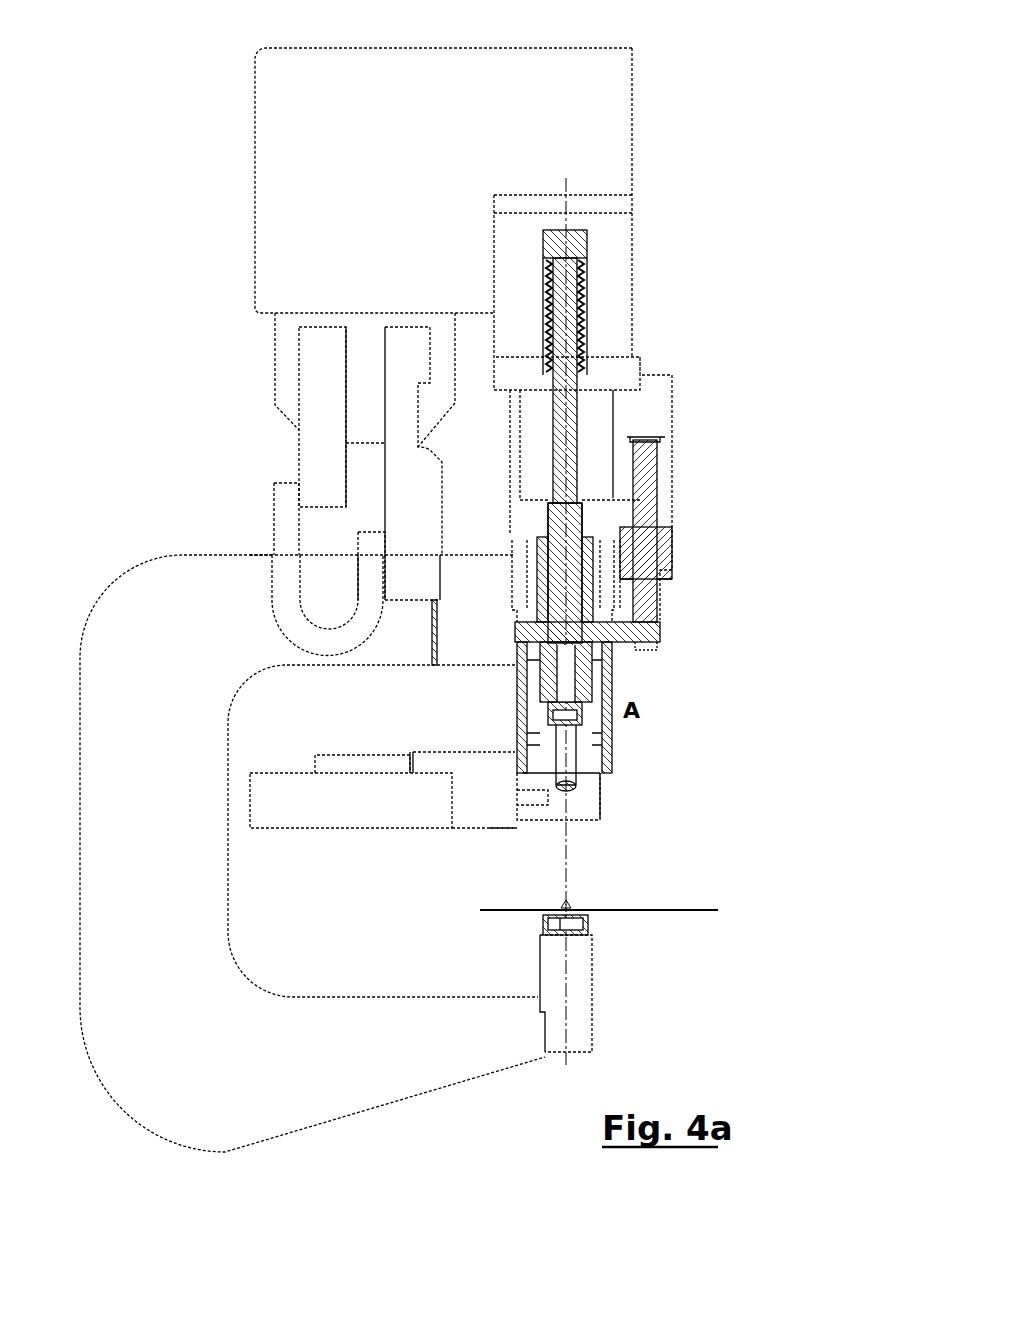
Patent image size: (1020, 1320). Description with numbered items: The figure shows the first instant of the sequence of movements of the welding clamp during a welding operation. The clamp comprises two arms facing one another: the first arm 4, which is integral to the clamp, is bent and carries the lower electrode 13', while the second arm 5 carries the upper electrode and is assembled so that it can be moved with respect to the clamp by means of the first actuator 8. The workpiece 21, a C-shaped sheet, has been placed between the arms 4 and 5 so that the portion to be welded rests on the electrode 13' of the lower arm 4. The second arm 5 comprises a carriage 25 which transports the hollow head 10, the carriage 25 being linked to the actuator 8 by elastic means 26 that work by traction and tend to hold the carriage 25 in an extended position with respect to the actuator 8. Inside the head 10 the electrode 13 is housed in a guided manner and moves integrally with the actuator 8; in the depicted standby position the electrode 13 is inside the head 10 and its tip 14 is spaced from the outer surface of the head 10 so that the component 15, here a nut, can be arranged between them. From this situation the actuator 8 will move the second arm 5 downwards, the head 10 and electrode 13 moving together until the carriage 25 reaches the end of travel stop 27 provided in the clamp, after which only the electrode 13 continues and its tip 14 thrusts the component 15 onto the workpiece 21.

The first arm 4 is at (398, 1073).
The second arm 5 is at (600, 681).
The first actuator 8 is at (575, 238).
The hollow head 10 is at (587, 807).
The electrode 13 is at (634, 724).
The electrode of the lower arm 13' is at (638, 940).
The tip 14 is at (517, 770).
The component 15 is at (565, 787).
The workpiece 21 is at (500, 909).
The carriage 25 is at (662, 630).
The elastic means 26 is at (586, 270).
The end of travel stop 27 is at (665, 560).